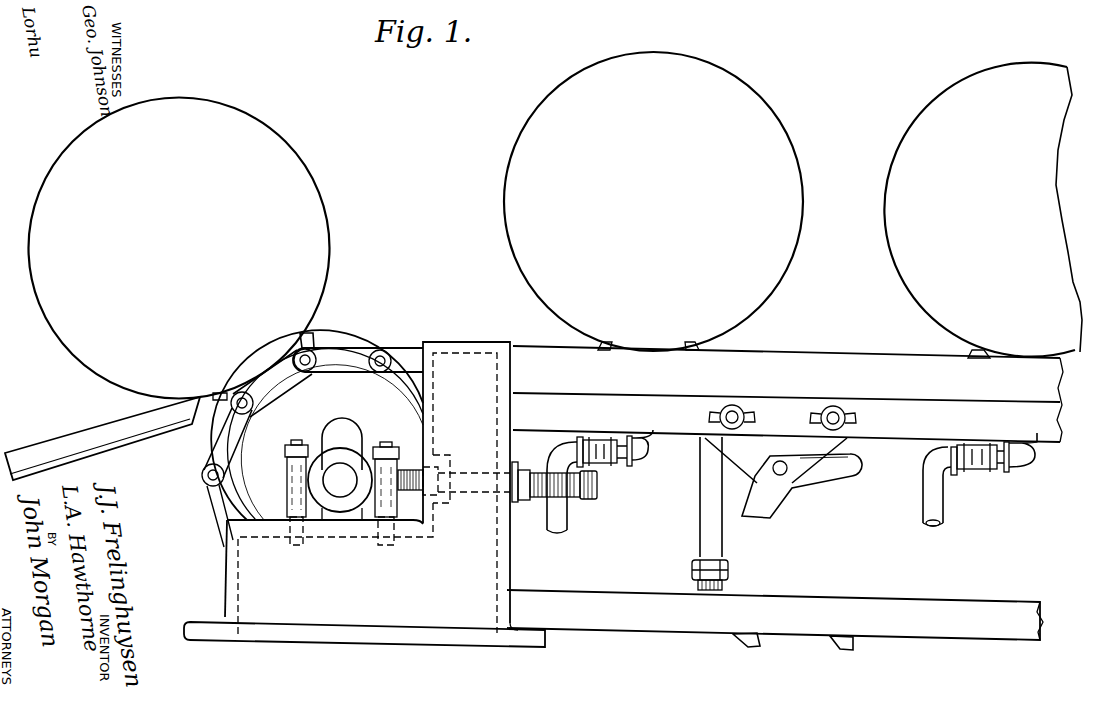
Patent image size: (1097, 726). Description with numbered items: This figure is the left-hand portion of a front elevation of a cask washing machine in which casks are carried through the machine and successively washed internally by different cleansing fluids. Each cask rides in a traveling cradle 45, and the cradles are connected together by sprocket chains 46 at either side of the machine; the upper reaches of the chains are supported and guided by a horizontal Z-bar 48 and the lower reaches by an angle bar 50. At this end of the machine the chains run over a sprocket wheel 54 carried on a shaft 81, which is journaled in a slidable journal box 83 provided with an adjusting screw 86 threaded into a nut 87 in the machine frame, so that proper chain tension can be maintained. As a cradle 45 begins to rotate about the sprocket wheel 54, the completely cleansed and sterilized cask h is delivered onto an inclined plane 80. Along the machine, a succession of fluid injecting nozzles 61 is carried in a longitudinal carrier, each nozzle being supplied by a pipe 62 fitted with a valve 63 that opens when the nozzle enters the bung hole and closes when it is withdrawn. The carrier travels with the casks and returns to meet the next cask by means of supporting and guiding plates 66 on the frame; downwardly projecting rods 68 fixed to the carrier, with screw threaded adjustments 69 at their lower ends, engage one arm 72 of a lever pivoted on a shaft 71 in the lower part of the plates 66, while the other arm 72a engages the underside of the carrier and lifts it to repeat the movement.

The cask h is at (305, 159).
The traveling cradle 45 is at (748, 646).
The sprocket chain 46 is at (345, 352).
The Z-bar 48 is at (797, 357).
The angle bar 50 is at (893, 600).
The sprocket wheel 54 is at (240, 452).
The fluid injecting nozzle 61 is at (650, 452).
The pipe 62 is at (567, 520).
The valve 63 is at (605, 462).
The supporting and guiding plate 66 is at (725, 462).
The downwardly projecting rod 68 is at (700, 537).
The screw threaded adjustment 69 is at (692, 571).
The shaft 71 is at (786, 463).
The lever arm 72 is at (770, 510).
The lever arm 72a is at (855, 465).
The inclined plane 80 is at (112, 452).
The shaft 81 is at (338, 497).
The journal box 83 is at (358, 425).
The adjusting screw 86 is at (597, 495).
The nut 87 is at (438, 500).